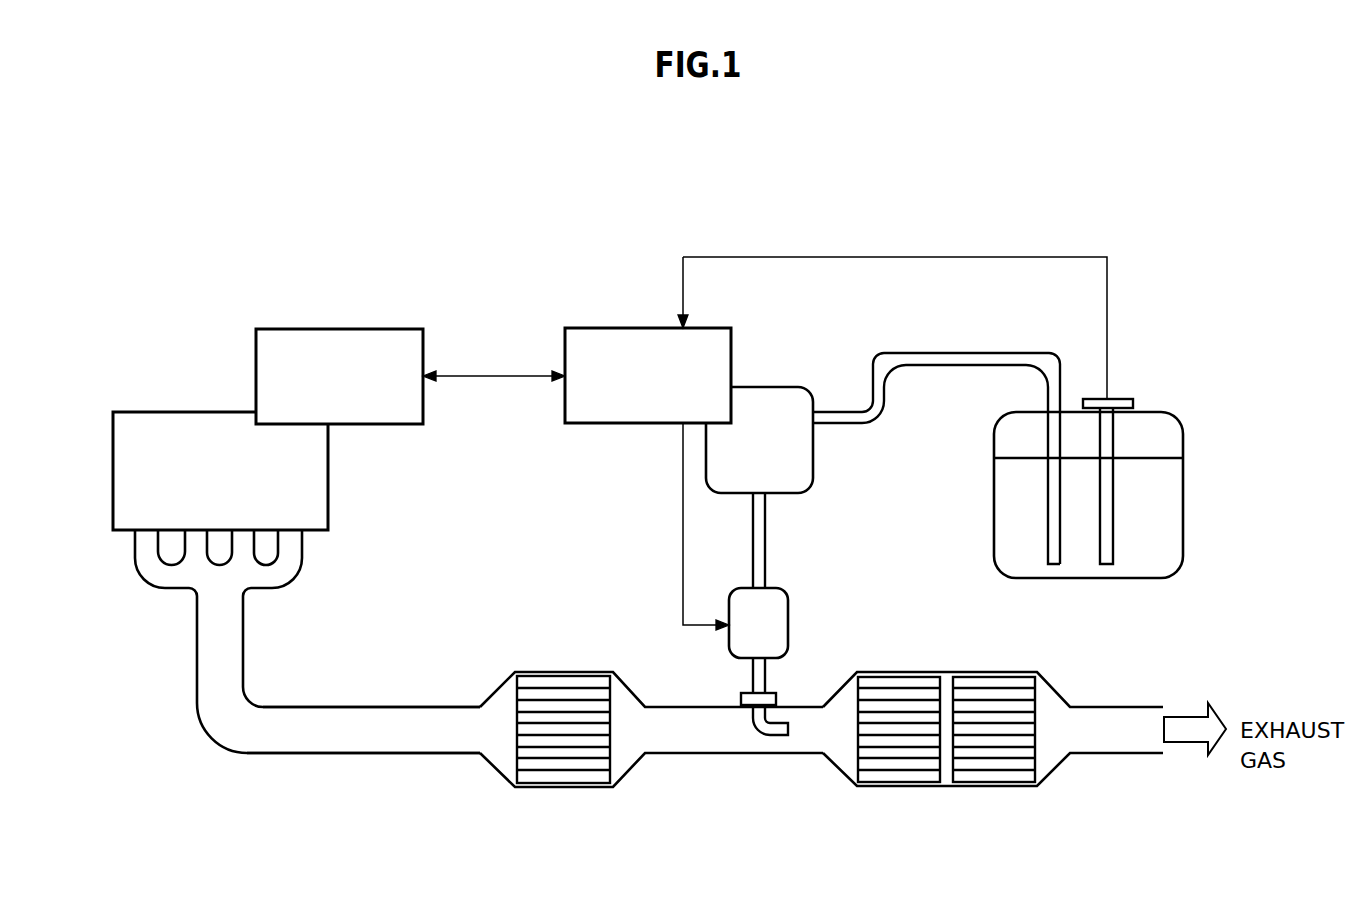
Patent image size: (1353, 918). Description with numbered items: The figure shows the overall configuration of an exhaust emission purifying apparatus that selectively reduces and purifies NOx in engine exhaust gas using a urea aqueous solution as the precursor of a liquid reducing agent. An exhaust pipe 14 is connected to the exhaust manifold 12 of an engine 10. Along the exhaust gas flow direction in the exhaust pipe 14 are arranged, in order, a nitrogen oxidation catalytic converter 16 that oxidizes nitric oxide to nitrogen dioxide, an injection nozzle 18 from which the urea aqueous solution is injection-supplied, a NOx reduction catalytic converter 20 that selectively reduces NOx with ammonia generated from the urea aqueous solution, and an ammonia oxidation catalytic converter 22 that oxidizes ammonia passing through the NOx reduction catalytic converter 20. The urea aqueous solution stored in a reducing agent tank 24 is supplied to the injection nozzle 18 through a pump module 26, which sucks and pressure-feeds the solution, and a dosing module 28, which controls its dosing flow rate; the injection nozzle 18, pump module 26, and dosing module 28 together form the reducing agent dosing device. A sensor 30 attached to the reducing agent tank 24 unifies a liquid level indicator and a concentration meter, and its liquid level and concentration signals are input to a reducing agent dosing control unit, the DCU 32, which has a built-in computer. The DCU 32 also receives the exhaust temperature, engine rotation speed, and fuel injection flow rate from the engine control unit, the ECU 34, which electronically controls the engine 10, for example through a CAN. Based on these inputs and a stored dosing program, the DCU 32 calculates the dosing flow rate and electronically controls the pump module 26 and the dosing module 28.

The engine 10 is at (155, 410).
The exhaust manifold 12 is at (292, 553).
The exhaust pipe 14 is at (343, 707).
The nitrogen oxidation catalytic converter 16 is at (563, 777).
The injection nozzle 18 is at (777, 728).
The NOx reduction catalytic converter 20 is at (907, 777).
The ammonia oxidation catalytic converter 22 is at (1000, 777).
The reducing agent tank 24 is at (1183, 432).
The pump module 26 is at (803, 387).
The dosing module 28 is at (782, 630).
The sensor 30 is at (1117, 395).
The reducing agent dosing control unit (DCU) 32 is at (593, 328).
The engine control unit (ECU) 34 is at (300, 328).